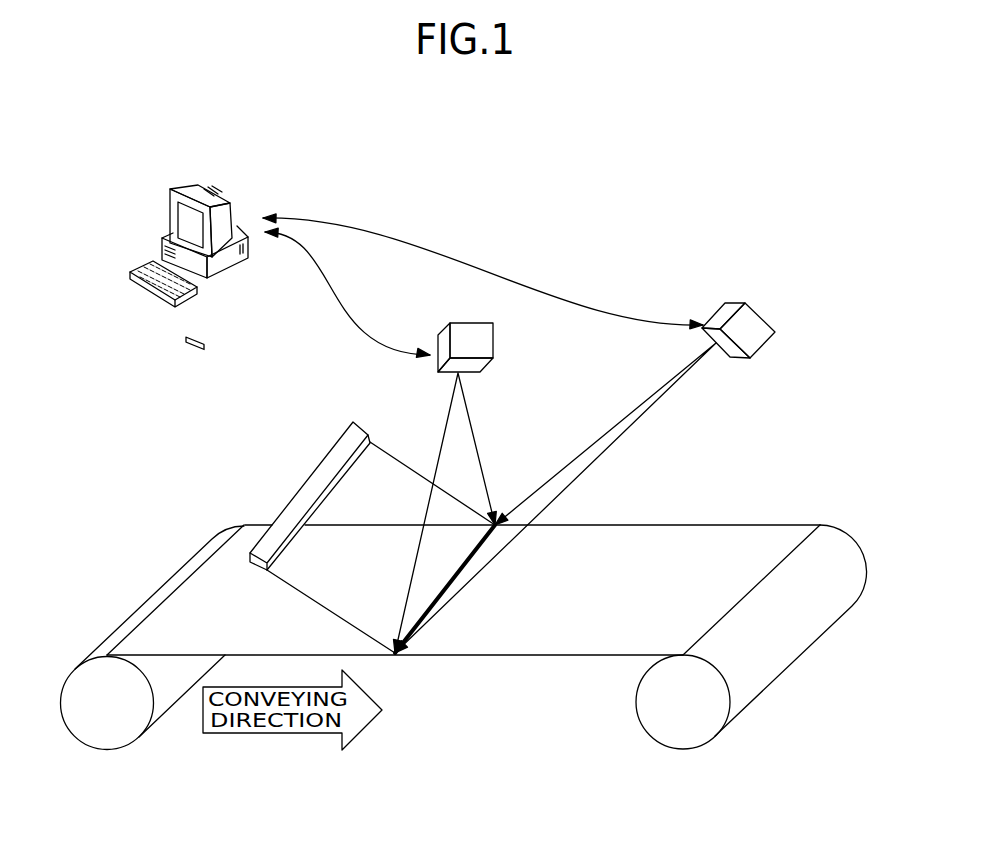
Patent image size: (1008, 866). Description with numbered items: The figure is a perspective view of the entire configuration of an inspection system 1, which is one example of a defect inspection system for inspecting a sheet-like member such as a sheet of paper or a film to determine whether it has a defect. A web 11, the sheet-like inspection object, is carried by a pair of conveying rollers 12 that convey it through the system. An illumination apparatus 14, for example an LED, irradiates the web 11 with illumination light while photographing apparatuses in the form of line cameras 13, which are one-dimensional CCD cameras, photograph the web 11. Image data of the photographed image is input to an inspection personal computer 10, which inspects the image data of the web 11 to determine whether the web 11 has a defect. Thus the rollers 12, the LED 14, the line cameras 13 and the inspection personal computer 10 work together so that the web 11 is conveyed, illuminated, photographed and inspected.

The inspection system 1 is at (690, 196).
The inspection personal computer 10 is at (222, 196).
The web 11 is at (468, 656).
The conveying rollers 12 is at (103, 749).
The line cameras 13 is at (495, 336).
The illumination apparatus 14 is at (302, 482).